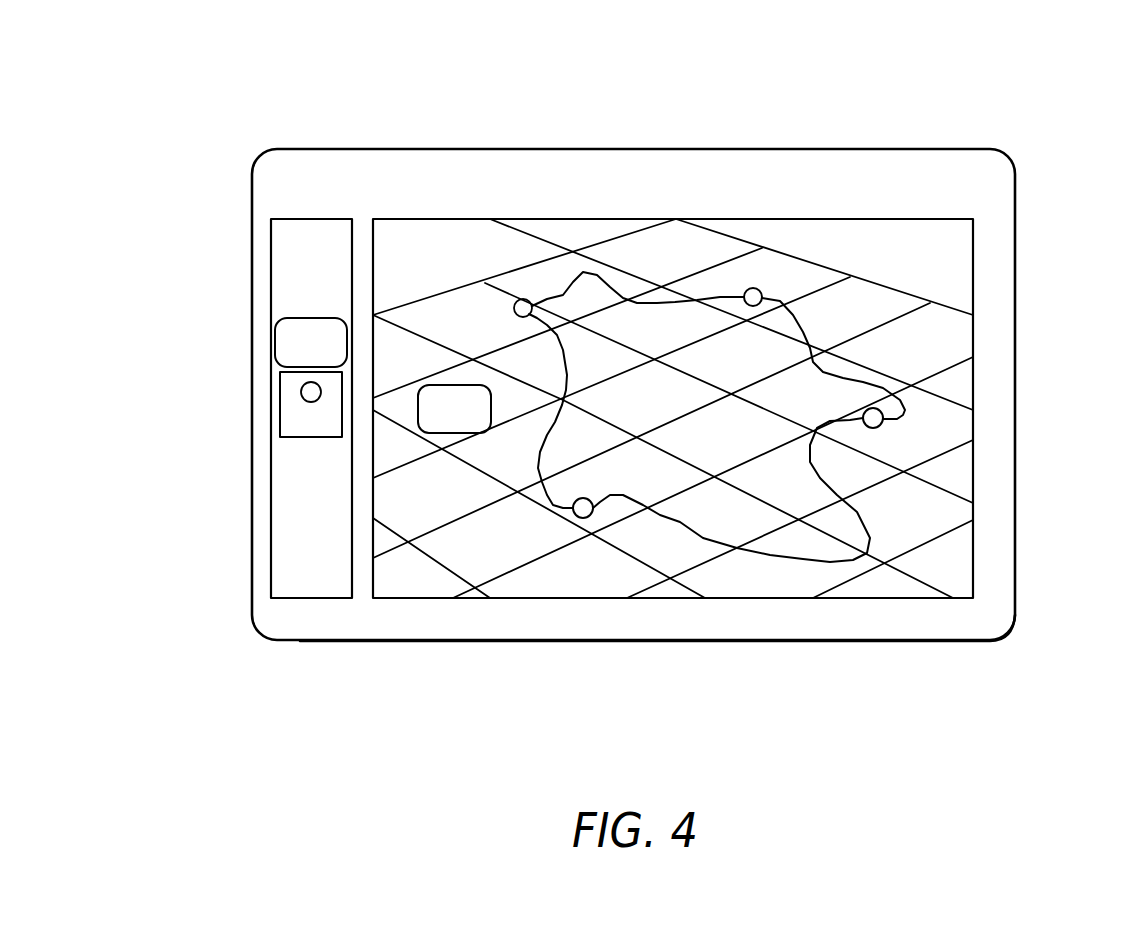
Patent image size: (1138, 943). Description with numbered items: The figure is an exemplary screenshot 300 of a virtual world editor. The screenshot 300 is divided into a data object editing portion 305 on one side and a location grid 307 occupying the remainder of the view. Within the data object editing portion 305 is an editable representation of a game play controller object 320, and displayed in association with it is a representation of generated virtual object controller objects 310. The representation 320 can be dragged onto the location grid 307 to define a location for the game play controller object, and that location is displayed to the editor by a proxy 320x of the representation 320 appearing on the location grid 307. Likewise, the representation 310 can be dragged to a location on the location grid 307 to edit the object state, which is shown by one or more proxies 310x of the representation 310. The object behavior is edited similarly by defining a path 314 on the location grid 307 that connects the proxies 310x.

The screenshot 300 is at (198, 124).
The data object editing portion 305 is at (312, 218).
The location grid 307 is at (962, 346).
The representation of generated virtual object controller objects 310 is at (300, 393).
The proxy of the representation 310x is at (523, 298).
The path 314 is at (692, 532).
The editable representation of a game play controller object 320 is at (303, 317).
The proxy of the representation 320x is at (463, 385).